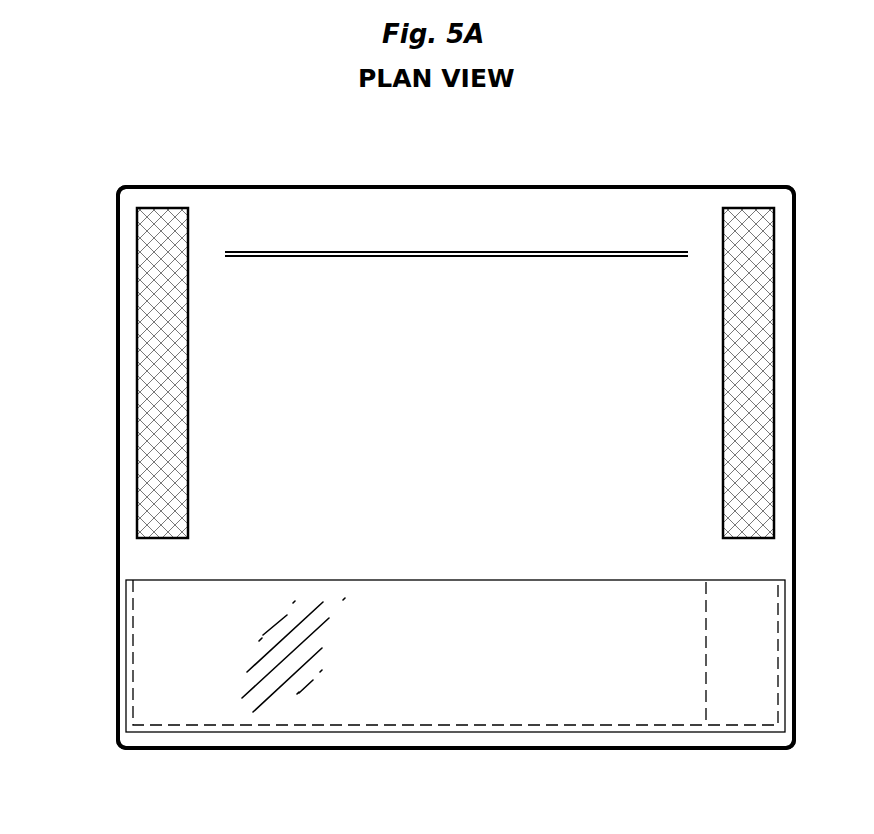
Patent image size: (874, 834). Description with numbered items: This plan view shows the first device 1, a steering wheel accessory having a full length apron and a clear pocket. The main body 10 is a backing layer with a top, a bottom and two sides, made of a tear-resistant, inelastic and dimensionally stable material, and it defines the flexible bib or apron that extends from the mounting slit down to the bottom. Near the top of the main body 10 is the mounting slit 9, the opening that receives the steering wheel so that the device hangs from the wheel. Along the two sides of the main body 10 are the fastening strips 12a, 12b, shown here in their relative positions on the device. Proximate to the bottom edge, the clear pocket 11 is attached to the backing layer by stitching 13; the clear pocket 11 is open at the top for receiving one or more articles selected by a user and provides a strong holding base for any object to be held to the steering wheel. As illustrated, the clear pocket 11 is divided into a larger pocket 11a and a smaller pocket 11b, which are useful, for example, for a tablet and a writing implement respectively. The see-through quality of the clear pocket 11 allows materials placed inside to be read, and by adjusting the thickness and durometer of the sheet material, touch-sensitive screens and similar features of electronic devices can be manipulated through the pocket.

The first device 1 is at (78, 372).
The mounting slit 9 is at (537, 248).
The main body 10 is at (318, 196).
The clear pocket 11 is at (160, 651).
The larger pocket 11a is at (521, 688).
The smaller pocket 11b is at (756, 637).
The fastening strip 12a is at (155, 204).
The fastening strip 12b is at (758, 209).
The stitching 13 is at (232, 727).